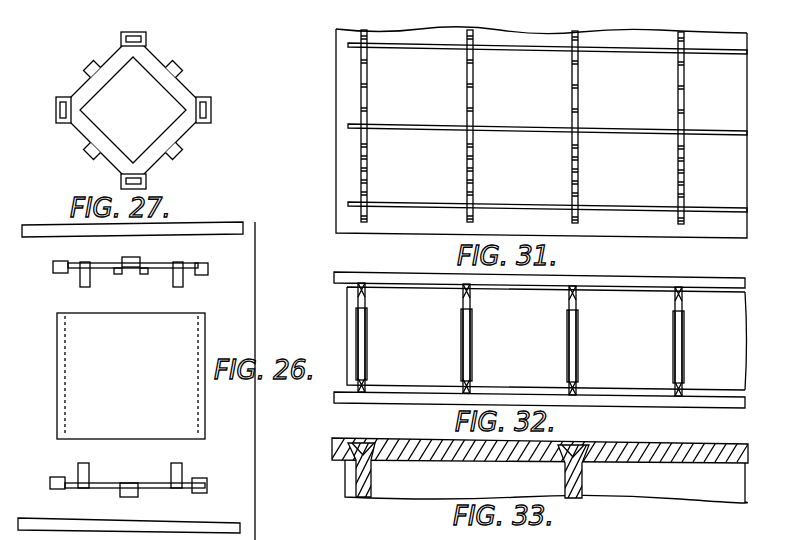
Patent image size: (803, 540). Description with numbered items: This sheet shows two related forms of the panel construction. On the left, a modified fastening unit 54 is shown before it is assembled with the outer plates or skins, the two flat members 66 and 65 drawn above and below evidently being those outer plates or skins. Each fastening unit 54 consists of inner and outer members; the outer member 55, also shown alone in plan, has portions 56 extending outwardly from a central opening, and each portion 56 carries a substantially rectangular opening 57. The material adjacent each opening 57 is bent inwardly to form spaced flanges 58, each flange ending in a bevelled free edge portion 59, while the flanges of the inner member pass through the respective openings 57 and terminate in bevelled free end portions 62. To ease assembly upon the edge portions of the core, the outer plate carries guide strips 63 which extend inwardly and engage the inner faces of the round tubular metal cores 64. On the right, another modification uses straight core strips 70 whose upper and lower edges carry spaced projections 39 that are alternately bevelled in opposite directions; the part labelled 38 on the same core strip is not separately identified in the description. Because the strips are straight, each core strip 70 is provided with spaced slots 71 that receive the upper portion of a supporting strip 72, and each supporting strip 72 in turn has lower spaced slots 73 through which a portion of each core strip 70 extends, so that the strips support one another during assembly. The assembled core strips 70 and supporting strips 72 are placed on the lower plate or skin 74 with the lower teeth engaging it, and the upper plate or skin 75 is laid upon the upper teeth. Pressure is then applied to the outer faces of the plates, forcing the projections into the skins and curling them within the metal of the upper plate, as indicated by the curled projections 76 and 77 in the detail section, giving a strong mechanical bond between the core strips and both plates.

In FIG. 31, the post ring 38 is at (367, 183).
In FIG. 31, the spaced projections 39 is at (367, 158).
In FIG. 26, the fastening unit 54 is at (119, 377).
In FIG. 27, the outer member 55 is at (184, 85).
In FIG. 27, the outwardly extending portions 56 is at (147, 43).
In FIG. 27, the rectangularly-shaped opening 57 is at (136, 33).
In FIG. 26, the spaced flanges 58 is at (118, 270).
In FIG. 26, the bevelled free edge portion 59 is at (126, 268).
In FIG. 26, the bevelled free end portion 62 is at (200, 264).
In FIG. 26, the guide strips 63 is at (78, 283).
In FIG. 26, the tubular metal cores 64 is at (205, 339).
In FIG. 26, the lower bar 65 is at (185, 522).
In FIG. 26, the upper bar 66 is at (200, 224).
In FIG. 31, the core strips 70 is at (473, 158).
In FIG. 32, the spaced slots 71 is at (367, 295).
In FIG. 31, the supporting strip 72 is at (492, 126).
In FIG. 32, the lower spaced slots 73 is at (369, 336).
In FIG. 32, the lower plate or skin 74 is at (606, 408).
In FIG. 32, the upper plate or skin 75 is at (606, 277).
In FIG. 33, the curled projection 76 is at (361, 442).
In FIG. 33, the curled projection 77 is at (372, 445).